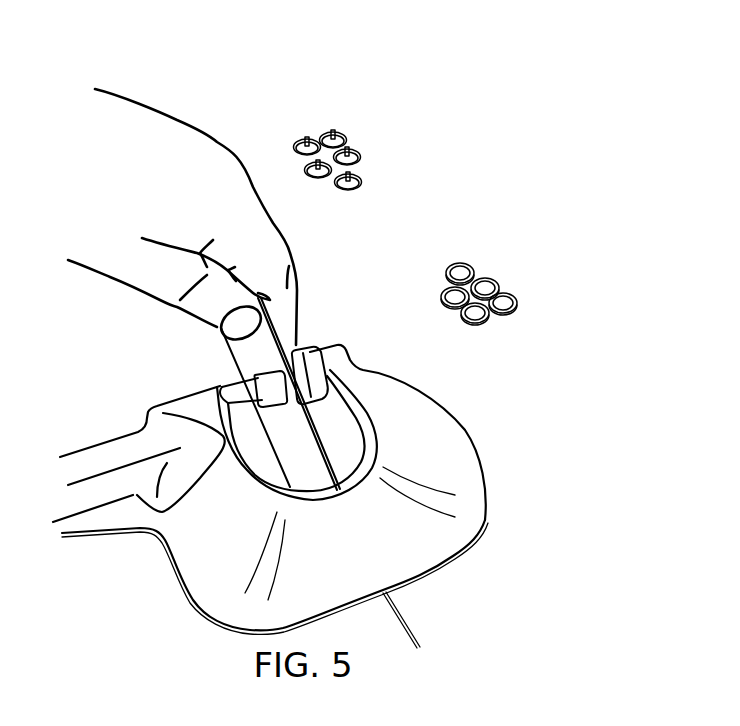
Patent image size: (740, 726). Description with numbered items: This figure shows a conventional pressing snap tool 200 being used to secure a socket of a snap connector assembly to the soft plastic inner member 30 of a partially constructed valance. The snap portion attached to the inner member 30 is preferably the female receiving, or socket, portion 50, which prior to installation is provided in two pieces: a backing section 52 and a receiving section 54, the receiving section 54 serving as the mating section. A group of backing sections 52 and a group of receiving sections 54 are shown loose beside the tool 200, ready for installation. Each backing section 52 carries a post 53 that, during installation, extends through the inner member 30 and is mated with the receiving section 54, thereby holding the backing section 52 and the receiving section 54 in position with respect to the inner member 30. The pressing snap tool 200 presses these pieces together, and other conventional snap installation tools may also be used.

The soft plastic inner member 30 is at (247, 355).
The female receiving (socket) snap portion 50 is at (277, 103).
The backing section 52 is at (382, 122).
The post 53 is at (370, 137).
The receiving section 54 is at (491, 265).
The pressing snap tool 200 is at (445, 457).